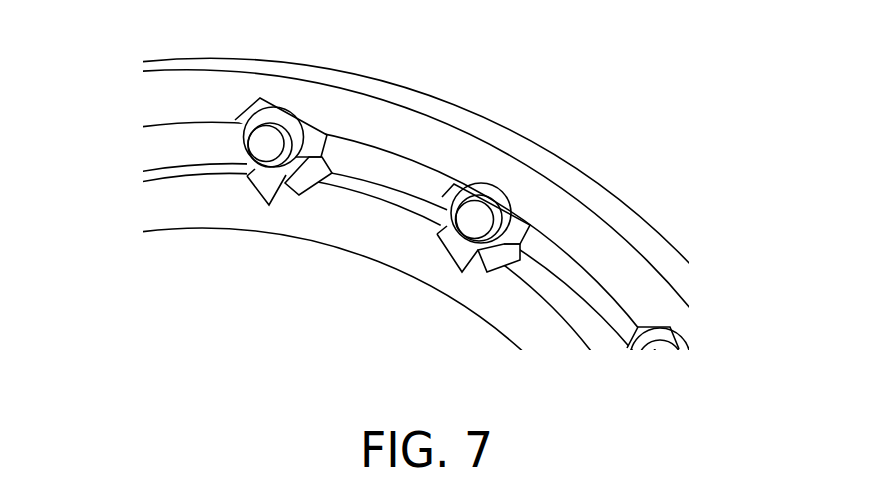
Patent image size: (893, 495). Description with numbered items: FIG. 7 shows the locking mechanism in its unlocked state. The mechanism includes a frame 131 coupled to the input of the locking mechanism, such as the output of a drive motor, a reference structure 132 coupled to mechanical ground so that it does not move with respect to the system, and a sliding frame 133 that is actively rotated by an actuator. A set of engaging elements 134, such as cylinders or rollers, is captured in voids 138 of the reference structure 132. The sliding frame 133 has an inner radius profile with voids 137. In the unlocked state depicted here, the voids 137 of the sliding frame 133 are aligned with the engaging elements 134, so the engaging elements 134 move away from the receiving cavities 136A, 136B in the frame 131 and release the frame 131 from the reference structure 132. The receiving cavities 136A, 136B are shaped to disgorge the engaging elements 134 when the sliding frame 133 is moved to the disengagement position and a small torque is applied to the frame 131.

The frame 131 is at (206, 208).
The reference structure 132 is at (537, 253).
The sliding frame 133 is at (525, 158).
The engaging elements 134 is at (278, 142).
The receiving cavity 136A is at (429, 171).
The receiving cavity 136B is at (464, 209).
The voids of sliding frame 137 is at (482, 177).
The voids of reference structure 138 is at (307, 175).